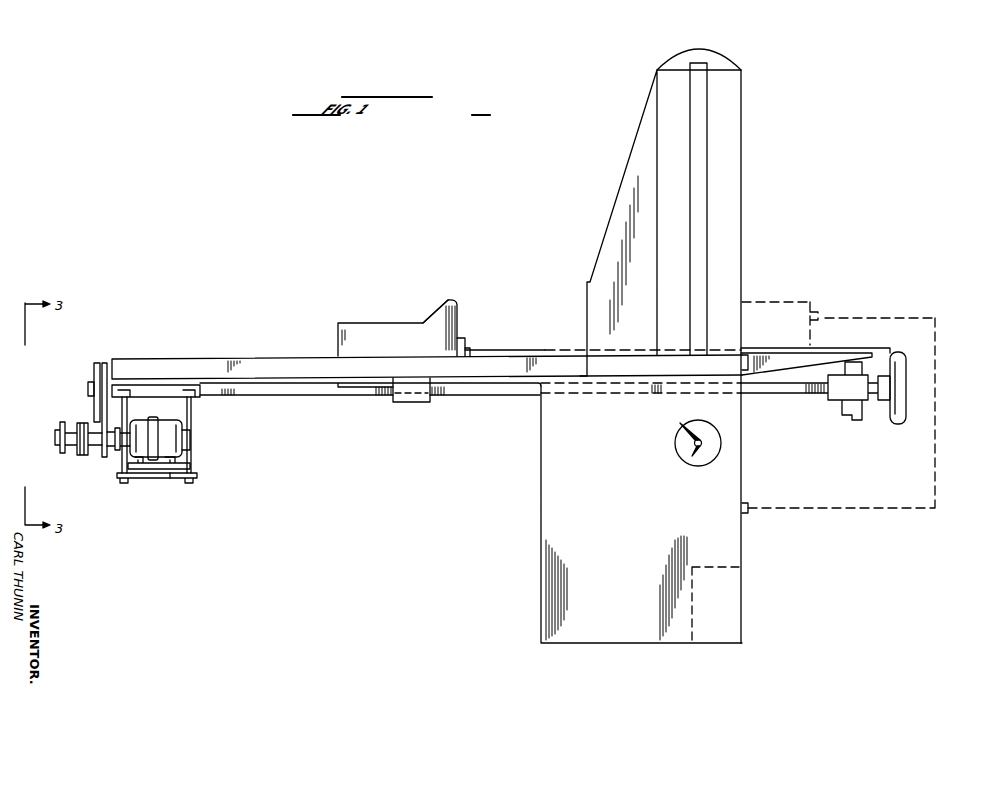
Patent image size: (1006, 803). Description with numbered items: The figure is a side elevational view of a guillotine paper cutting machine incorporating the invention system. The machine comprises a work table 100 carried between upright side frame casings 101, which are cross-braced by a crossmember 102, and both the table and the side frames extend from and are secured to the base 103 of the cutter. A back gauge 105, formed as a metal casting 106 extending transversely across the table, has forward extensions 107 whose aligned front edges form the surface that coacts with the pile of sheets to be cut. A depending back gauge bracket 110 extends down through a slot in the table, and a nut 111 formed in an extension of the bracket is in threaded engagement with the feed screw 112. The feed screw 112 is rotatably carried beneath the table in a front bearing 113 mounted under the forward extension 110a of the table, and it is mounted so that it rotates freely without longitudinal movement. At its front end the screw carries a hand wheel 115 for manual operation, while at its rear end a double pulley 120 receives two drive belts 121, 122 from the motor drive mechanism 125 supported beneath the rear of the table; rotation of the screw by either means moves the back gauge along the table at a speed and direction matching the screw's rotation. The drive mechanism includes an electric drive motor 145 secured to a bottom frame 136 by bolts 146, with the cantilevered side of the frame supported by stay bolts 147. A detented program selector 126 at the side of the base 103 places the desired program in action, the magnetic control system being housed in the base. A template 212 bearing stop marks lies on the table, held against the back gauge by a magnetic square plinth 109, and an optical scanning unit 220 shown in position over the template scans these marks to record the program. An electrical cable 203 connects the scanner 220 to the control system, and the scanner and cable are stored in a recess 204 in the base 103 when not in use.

The work table 100 is at (262, 368).
The upright side frame casings 101 is at (688, 215).
The crossmember 102 is at (687, 60).
The base 103 is at (650, 558).
The back gauge 105 is at (442, 299).
The metal casting 106 is at (408, 314).
The forward extensions 107 is at (461, 324).
The magnetic square plinth 109 is at (466, 350).
The back gauge bracket 110 is at (350, 385).
The forward extension of table 110a is at (838, 355).
The nut 111 is at (405, 393).
The feed screw 112 is at (90, 388).
The front bearing 113 is at (838, 415).
The hand wheel 115 is at (896, 412).
The double pulley 120 is at (124, 371).
The drive belt 121 is at (105, 365).
The drive belt 122 is at (95, 365).
The motor drive mechanism 125 is at (151, 487).
The program selector 126 is at (688, 457).
The bottom frame 136 is at (170, 480).
The electric drive motor 145 is at (166, 427).
The bolts 146 is at (172, 466).
The stay bolts 147 is at (195, 451).
The electrical cable 203 is at (938, 447).
The recess 204 is at (723, 570).
The template 212 is at (553, 333).
The optical scanning unit 220 is at (805, 305).